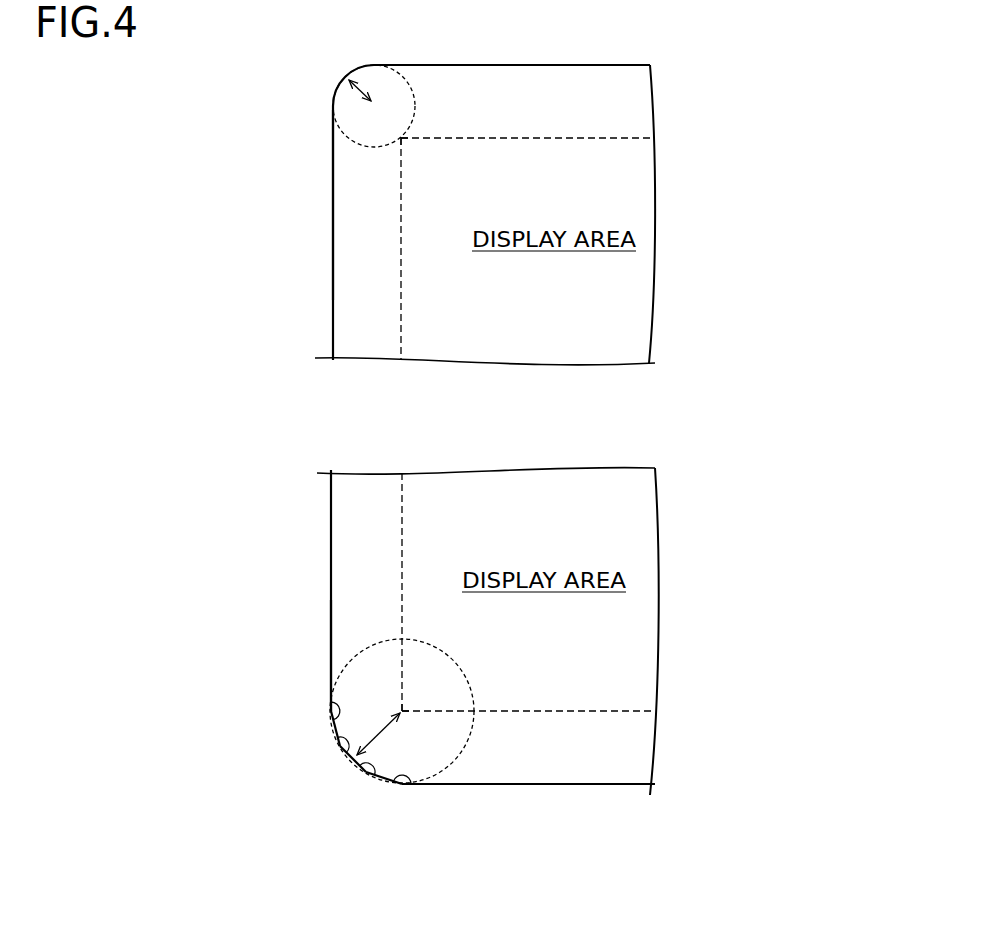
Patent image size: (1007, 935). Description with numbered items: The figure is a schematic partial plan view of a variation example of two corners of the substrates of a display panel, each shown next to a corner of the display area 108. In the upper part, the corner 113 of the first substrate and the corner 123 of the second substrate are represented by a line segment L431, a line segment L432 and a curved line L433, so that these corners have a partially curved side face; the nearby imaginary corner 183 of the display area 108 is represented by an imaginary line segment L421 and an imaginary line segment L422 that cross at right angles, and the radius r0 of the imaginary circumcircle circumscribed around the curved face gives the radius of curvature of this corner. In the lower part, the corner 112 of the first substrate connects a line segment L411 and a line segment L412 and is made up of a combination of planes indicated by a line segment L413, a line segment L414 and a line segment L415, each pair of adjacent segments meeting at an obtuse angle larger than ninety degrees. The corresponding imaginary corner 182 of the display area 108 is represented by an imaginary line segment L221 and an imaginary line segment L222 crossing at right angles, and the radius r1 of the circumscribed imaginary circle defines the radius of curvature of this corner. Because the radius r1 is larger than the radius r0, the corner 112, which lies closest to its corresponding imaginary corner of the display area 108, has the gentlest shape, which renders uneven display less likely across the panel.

The display area 108 is at (620, 308).
The corner of the first substrate 113 is at (289, 233).
The corner of the second substrate 123 is at (373, 291).
The corner of the first substrate 112 is at (347, 643).
The imaginary corner of the display area 183 is at (402, 138).
The imaginary corner of the display area 182 is at (402, 711).
The line segment L431 is at (540, 65).
The line segment L432 is at (333, 185).
The curved line L433 is at (348, 78).
The imaginary line segment L421 is at (592, 138).
The imaginary line segment L422 is at (402, 305).
The radius r0 is at (357, 95).
The line segment L411 is at (540, 784).
The line segment L412 is at (331, 576).
The line segment L413 is at (383, 778).
The line segment L414 is at (355, 758).
The line segment L415 is at (337, 730).
The imaginary line segment L221 is at (560, 711).
The imaginary line segment L222 is at (402, 510).
The radius r1 is at (378, 737).